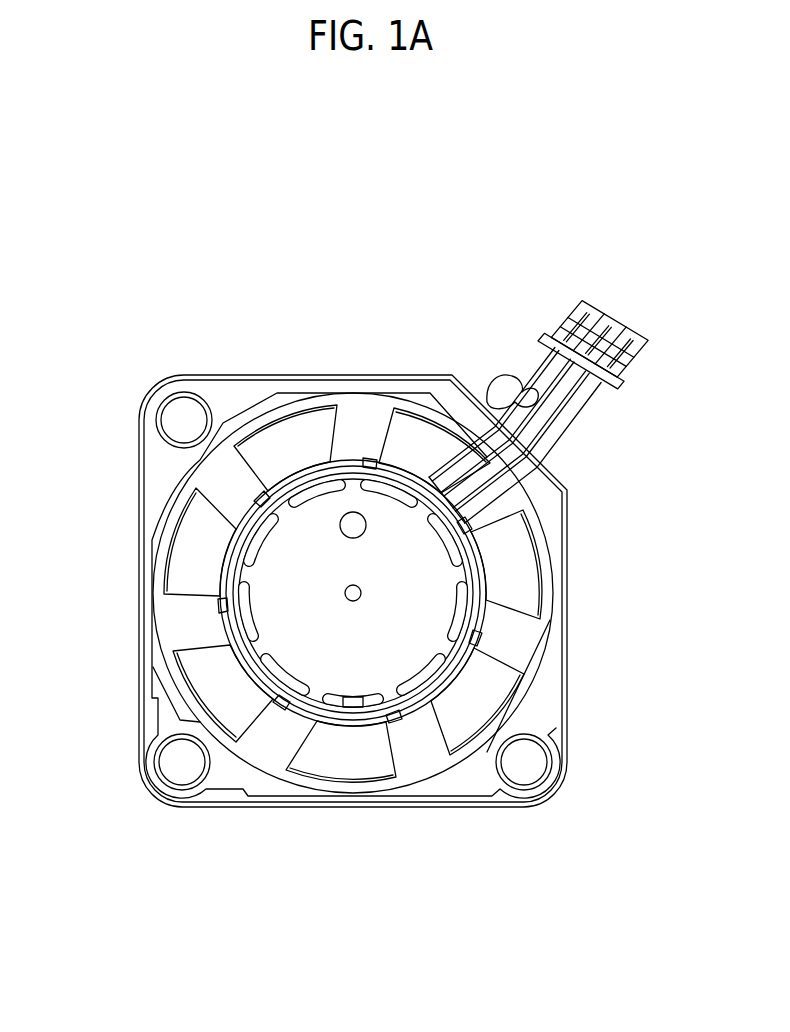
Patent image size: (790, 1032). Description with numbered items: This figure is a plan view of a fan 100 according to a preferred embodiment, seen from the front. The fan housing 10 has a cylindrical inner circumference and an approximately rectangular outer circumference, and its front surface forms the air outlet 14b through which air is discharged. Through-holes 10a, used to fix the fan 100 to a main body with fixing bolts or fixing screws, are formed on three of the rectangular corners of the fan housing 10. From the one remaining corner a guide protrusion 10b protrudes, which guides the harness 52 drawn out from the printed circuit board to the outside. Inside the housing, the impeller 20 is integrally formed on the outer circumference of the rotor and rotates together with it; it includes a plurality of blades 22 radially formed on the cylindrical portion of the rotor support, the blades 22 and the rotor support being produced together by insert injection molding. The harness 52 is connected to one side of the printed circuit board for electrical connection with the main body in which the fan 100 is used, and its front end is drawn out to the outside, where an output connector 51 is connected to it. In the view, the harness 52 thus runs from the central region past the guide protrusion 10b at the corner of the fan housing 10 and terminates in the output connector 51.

The fan 100 is at (672, 243).
The fan housing 10 is at (566, 652).
The through-holes 10a is at (548, 735).
The guide protrusion 10b is at (505, 385).
The air outlet 14b is at (160, 640).
The impeller 20 is at (353, 639).
The blades 22 is at (320, 760).
The output connector 51 is at (638, 367).
The harness 52 is at (578, 415).